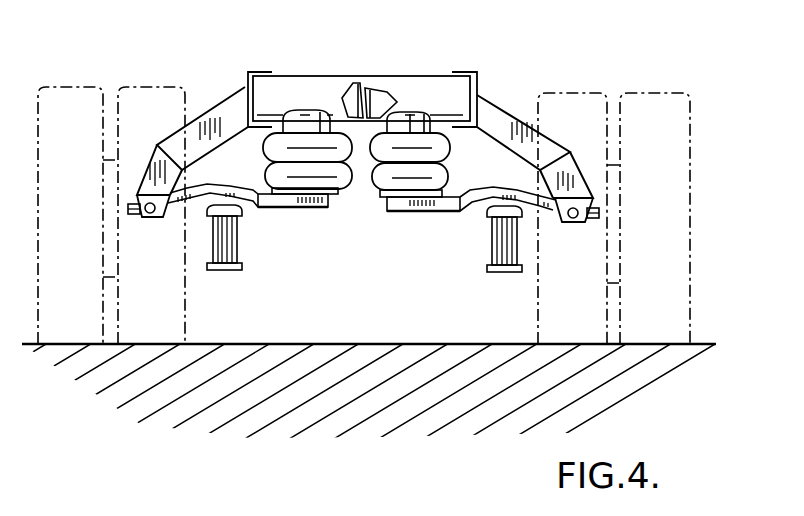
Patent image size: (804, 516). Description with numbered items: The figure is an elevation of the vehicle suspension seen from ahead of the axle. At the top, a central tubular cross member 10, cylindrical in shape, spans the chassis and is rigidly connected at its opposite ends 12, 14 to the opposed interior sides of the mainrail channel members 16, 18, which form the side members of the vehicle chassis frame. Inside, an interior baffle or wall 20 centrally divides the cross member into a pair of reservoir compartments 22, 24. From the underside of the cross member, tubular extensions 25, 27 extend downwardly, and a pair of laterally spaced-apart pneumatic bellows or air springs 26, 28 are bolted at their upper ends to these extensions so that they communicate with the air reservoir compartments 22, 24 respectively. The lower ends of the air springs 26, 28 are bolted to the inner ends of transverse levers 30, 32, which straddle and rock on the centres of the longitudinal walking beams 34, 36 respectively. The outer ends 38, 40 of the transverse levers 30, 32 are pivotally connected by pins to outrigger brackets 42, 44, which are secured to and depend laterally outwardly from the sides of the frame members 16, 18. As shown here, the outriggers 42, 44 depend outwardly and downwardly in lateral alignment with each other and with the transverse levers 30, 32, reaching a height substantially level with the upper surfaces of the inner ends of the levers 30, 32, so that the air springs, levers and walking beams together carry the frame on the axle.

The central tubular cross member 10 is at (415, 80).
The end of cross member 12 is at (262, 85).
The end of cross member 14 is at (463, 97).
The mainrail channel member 16 is at (248, 72).
The mainrail channel member 18 is at (476, 72).
The interior baffle or wall 20 is at (378, 103).
The reservoir compartment 22 is at (353, 83).
The reservoir compartment 24 is at (388, 96).
The tubular extension 25 is at (310, 113).
The pneumatic bellows or air spring 26 is at (348, 188).
The tubular extension 27 is at (412, 116).
The pneumatic bellows or air spring 28 is at (377, 183).
The transverse lever 30 is at (263, 208).
The transverse lever 32 is at (460, 207).
The longitudinal walking beam 34 is at (237, 208).
The longitudinal walking beam 36 is at (493, 208).
The outer end of transverse lever 38 is at (128, 208).
The outer end of transverse lever 40 is at (600, 213).
The outrigger bracket 42 is at (215, 113).
The outrigger bracket 44 is at (505, 115).